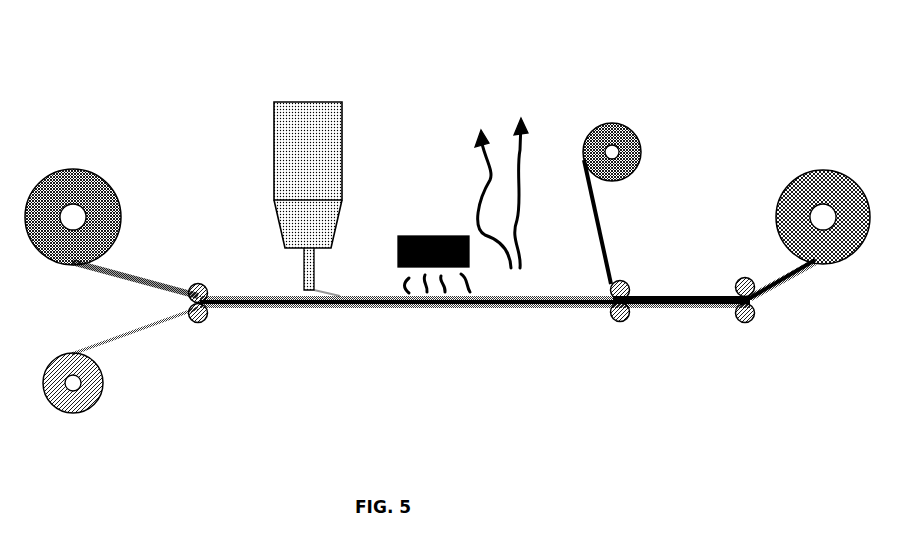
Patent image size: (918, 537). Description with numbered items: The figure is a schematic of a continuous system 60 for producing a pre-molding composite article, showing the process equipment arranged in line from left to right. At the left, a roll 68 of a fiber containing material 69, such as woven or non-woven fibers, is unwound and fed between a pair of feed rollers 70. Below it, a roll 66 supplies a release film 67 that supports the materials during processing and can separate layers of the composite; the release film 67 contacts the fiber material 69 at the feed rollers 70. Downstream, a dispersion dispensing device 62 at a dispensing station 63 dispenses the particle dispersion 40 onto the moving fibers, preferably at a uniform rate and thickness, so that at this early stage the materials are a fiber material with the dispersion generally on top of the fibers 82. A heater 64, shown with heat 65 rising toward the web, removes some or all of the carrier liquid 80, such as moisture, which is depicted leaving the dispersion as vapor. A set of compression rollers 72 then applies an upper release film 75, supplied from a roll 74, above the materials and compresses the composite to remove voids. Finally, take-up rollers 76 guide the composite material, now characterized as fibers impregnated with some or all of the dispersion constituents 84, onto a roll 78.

The particle dispersion 40 is at (310, 292).
The lamination apparatus 60 is at (730, 63).
The dispersion dispensing device 62 is at (320, 143).
The coating station 63 is at (380, 292).
The heater 64 is at (448, 236).
The heat 65 is at (465, 295).
The roll of release film 66 is at (88, 388).
The release film 67 is at (133, 330).
The roll of fiber containing material 68 is at (76, 185).
The fiber containing material 69 is at (277, 292).
The feed rollers 70 is at (205, 287).
The compression rollers 72 is at (630, 318).
The roll 74 is at (606, 130).
The upper release film 75 is at (680, 292).
The take-up rollers 76 is at (756, 316).
The roll 78 is at (836, 205).
The carrier liquid 80 is at (490, 170).
The fiber material with dispersion on top of the fibers 82 is at (357, 296).
The fibers impregnated with dispersion constituents 84 is at (698, 307).